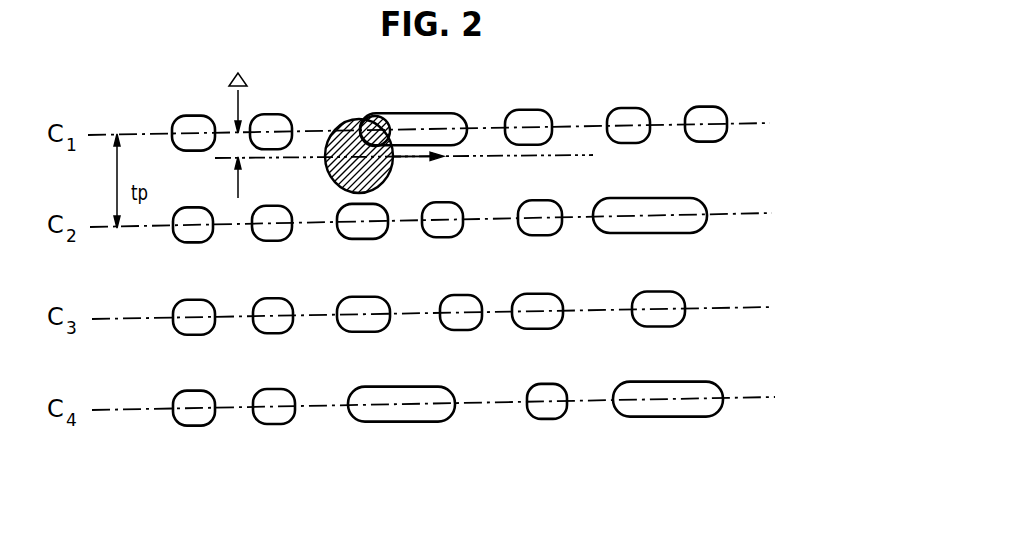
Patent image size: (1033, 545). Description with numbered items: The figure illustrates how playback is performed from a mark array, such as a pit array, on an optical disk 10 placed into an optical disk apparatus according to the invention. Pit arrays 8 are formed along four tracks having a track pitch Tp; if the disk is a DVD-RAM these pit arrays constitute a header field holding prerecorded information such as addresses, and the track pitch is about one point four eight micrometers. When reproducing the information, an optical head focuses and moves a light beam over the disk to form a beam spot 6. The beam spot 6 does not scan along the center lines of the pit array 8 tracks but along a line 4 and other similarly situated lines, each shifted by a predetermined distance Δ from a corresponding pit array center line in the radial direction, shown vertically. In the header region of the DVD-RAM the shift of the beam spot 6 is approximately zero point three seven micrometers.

The line 4 is at (551, 154).
The beam spot 6 is at (336, 122).
The pit array 8 is at (620, 108).
The optical disk 10 is at (700, 70).